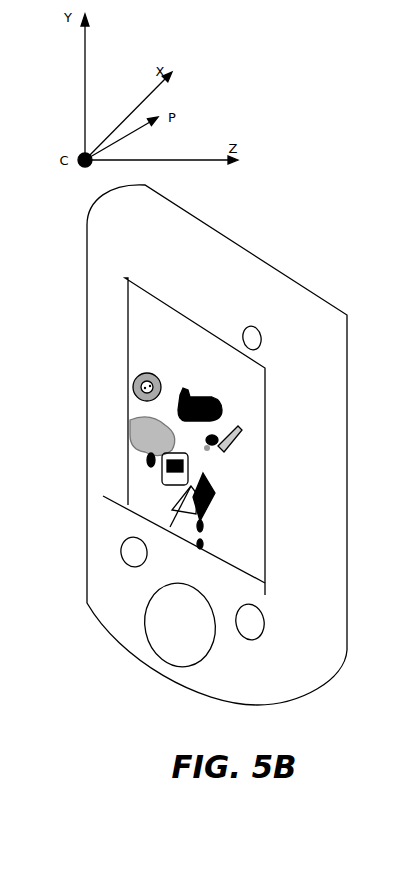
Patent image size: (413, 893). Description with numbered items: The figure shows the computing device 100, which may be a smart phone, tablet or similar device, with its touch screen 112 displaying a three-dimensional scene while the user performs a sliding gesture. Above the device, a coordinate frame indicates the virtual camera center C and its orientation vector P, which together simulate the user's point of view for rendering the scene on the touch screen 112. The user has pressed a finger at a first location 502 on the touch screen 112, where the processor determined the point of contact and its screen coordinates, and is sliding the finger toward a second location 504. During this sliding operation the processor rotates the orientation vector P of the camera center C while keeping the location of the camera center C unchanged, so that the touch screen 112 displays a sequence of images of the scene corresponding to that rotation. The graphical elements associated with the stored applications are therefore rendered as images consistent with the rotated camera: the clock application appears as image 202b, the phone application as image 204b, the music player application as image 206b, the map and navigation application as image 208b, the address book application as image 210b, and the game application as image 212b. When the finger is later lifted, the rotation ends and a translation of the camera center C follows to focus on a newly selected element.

The computing device 100 is at (193, 205).
The touch screen 112 is at (258, 572).
The image of clock application graphical element 202b is at (144, 370).
The image of phone application graphical element 204b is at (140, 424).
The image of music player application graphical element 206b is at (167, 483).
The image of map and navigation application graphical element 208b is at (193, 394).
The image of address book application graphical element 210b is at (170, 527).
The image of game application graphical element 212b is at (227, 428).
The first location 502 is at (140, 456).
The second location 504 is at (200, 550).